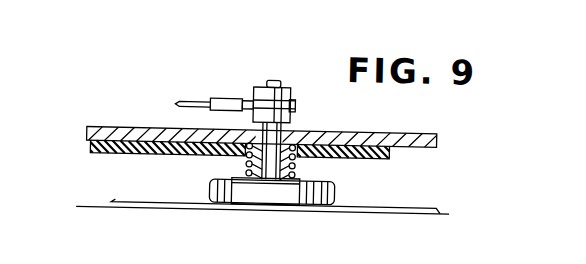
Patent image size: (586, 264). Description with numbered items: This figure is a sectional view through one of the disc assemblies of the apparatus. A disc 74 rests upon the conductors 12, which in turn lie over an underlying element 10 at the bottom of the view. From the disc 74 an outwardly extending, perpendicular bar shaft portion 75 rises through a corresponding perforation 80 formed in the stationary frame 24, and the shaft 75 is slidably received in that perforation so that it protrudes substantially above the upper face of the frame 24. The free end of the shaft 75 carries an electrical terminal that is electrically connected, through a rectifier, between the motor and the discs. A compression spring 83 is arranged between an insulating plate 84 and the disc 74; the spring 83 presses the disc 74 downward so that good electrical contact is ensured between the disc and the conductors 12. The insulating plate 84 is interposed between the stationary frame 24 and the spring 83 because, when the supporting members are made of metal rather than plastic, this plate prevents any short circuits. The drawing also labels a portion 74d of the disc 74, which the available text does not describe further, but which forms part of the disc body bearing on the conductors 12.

The base support 10 is at (87, 211).
The conductors 12 is at (414, 206).
The stationary frame 24 is at (100, 131).
The insulating plate 84 is at (131, 151).
The bar shaft portion 75 is at (279, 132).
The perforation 80 is at (238, 136).
The compression spring 83 is at (298, 170).
The disc 74 is at (213, 210).
The roller hub 74d is at (277, 194).